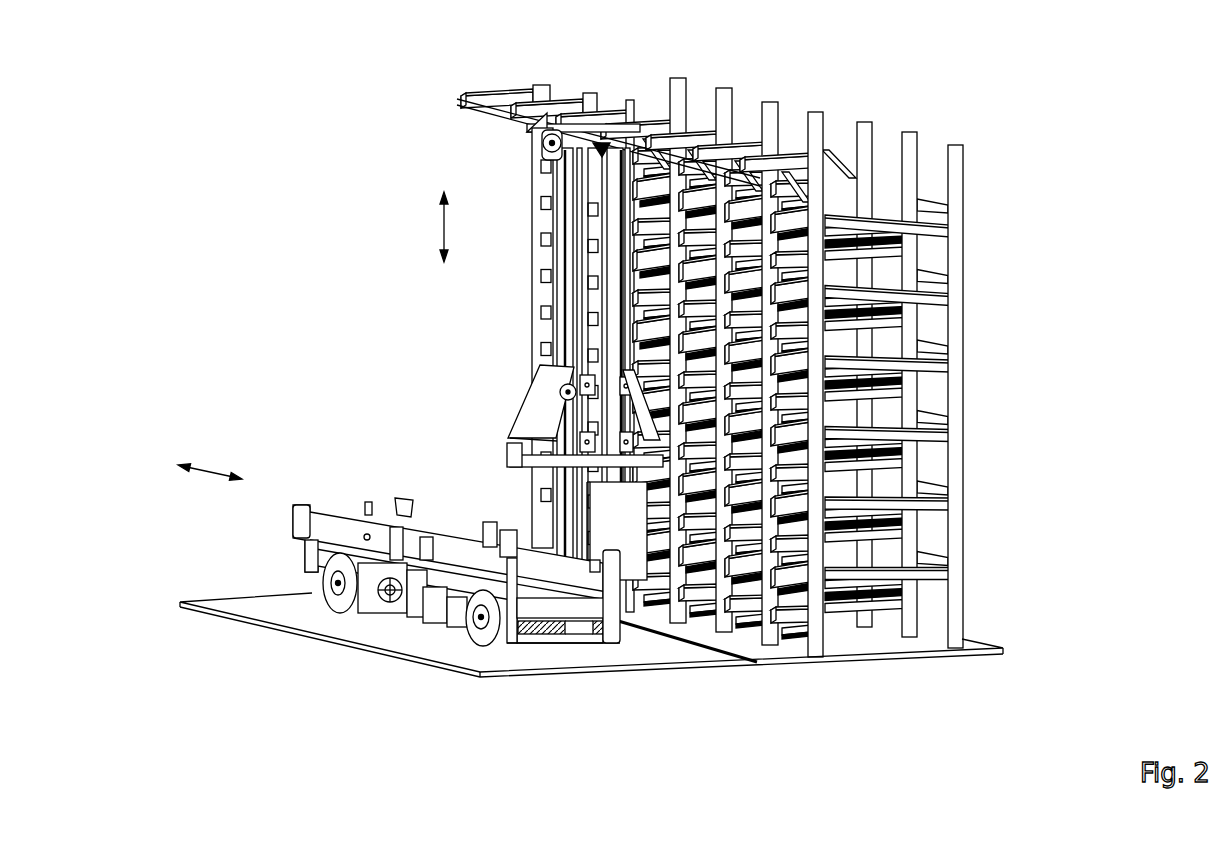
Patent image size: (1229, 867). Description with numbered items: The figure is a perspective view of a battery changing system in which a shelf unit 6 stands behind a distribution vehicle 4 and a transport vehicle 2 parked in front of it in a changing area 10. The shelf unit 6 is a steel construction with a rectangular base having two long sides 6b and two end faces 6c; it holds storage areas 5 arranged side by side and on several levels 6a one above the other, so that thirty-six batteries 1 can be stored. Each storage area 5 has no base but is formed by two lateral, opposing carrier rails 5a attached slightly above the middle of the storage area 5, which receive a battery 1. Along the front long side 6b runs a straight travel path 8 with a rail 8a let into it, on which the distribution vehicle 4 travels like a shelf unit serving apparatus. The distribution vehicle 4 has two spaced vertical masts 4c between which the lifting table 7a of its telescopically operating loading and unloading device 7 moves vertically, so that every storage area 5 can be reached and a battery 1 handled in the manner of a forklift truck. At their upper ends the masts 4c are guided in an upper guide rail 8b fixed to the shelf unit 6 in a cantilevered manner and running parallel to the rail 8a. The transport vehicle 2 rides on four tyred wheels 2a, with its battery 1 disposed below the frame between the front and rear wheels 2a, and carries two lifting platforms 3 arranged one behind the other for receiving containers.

The battery 1 is at (418, 620).
The transport vehicle 2 is at (323, 512).
The wheels 2a is at (337, 597).
The lifting platforms 3 is at (358, 513).
The distribution vehicle 4 is at (482, 322).
The vertical masts 4c is at (612, 219).
The storage areas 5 is at (933, 318).
The carrier rails 5a is at (888, 323).
The shelf unit 6 is at (942, 124).
The levels 6a is at (935, 278).
The long sides 6b is at (785, 582).
The end faces 6c is at (887, 229).
The loading and unloading device 7 is at (540, 402).
The lifting table 7a is at (519, 448).
The travel path 8 is at (591, 653).
The rail 8a is at (735, 665).
The upper guide rail 8b is at (566, 121).
The changing area 10 is at (257, 573).